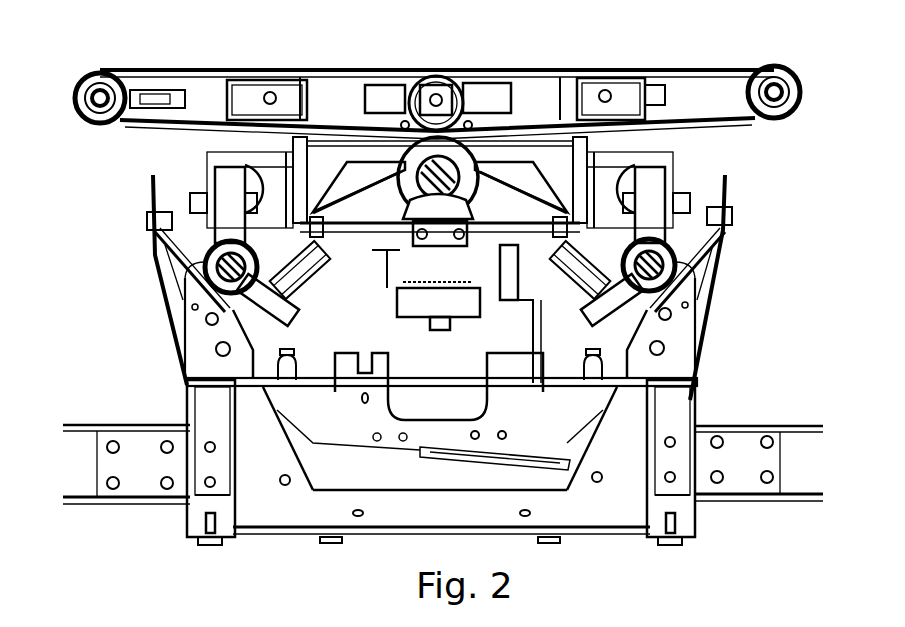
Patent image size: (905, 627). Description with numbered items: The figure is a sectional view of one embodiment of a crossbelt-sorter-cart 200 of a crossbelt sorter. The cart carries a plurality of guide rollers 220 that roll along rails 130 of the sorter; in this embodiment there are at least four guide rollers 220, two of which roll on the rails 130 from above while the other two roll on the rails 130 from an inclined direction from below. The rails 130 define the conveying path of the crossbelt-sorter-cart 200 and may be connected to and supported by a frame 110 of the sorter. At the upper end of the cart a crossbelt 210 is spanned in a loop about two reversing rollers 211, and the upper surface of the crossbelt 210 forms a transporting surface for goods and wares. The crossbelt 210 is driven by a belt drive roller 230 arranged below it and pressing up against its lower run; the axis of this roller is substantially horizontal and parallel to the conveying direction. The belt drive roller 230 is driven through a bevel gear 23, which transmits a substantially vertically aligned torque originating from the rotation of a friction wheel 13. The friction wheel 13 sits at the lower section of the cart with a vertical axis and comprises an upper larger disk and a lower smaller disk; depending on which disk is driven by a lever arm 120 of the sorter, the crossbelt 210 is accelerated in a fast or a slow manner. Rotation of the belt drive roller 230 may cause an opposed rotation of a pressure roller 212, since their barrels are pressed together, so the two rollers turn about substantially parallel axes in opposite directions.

The crossbelt-sorter-cart 200 is at (104, 217).
The frame 110 is at (738, 424).
The lever arm 120 is at (535, 280).
The rails 130 is at (173, 303).
The friction wheel 13 is at (385, 282).
The crossbelt 210 is at (642, 68).
The reversing rollers 211 is at (78, 82).
The pressure roller 212 is at (470, 100).
The guide rollers 220 is at (215, 185).
The belt drive roller 230 is at (392, 196).
The bevel gear 23 is at (465, 195).